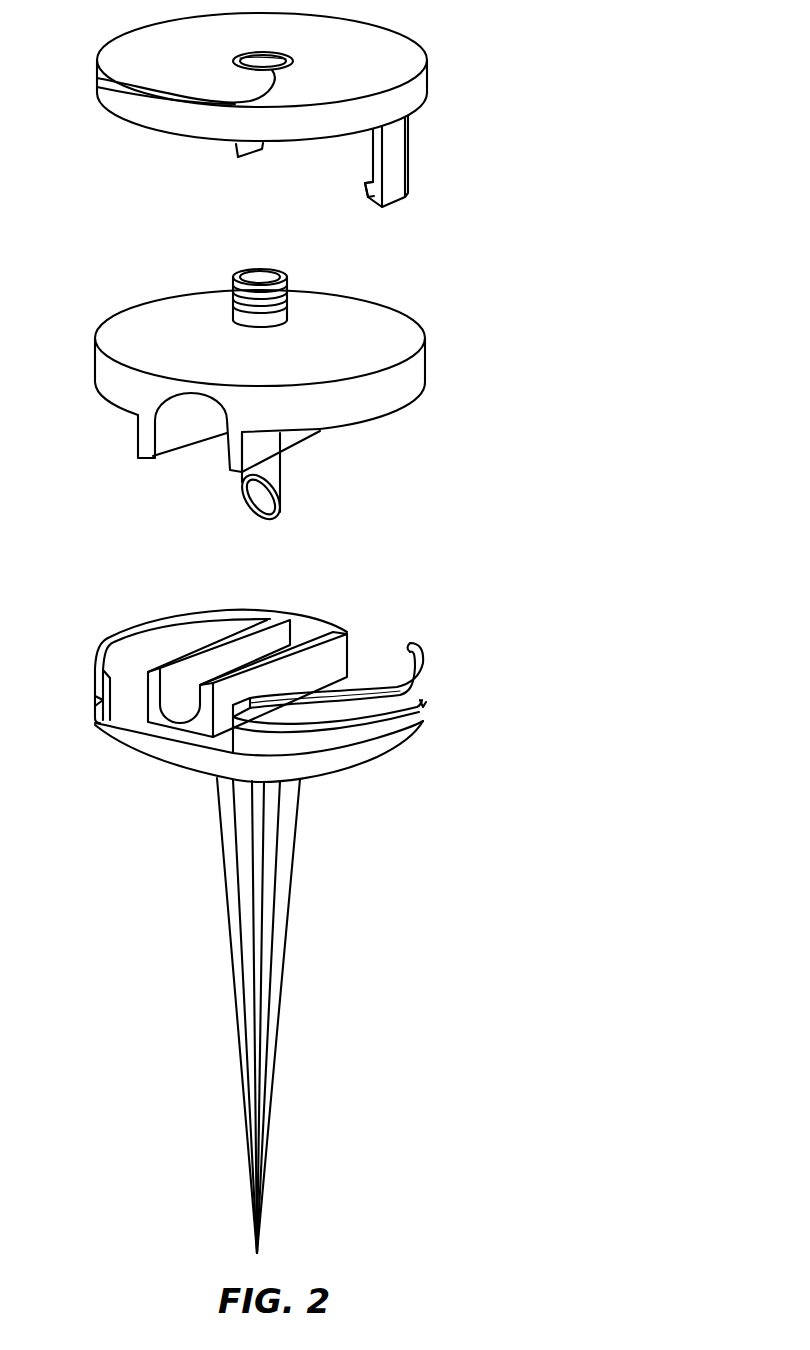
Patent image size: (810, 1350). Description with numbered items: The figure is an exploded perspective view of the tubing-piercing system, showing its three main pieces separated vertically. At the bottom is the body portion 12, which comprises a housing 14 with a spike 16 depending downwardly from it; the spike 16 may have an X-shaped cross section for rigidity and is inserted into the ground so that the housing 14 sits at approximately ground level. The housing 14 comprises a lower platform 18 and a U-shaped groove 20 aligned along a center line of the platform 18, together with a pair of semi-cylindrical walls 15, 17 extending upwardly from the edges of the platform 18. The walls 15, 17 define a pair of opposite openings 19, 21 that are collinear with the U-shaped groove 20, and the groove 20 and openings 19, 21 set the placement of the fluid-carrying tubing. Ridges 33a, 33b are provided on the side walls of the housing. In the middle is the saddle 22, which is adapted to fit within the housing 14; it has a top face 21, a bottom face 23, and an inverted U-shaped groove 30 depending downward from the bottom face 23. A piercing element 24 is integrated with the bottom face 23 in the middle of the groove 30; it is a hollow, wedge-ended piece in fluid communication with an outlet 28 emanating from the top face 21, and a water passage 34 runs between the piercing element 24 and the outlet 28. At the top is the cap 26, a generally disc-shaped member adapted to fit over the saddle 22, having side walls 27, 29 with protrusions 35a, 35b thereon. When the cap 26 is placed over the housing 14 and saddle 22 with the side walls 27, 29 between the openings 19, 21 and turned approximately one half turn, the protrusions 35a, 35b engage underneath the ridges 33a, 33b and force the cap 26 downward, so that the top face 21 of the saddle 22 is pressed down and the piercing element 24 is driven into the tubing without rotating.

The body portion 12 is at (262, 931).
The housing 14 is at (360, 752).
The semi-cylindrical wall 15 is at (413, 682).
The spike 16 is at (278, 1000).
The semi-cylindrical wall 17 is at (96, 668).
The lower platform 18 is at (411, 643).
The opening 19 is at (200, 743).
The U-shaped groove 20 is at (113, 740).
The opening 21 is at (127, 325).
The saddle 22 is at (393, 308).
The bottom face 23 is at (380, 425).
The piercing element 24 is at (273, 470).
The cap 26 is at (398, 45).
The side wall 27 is at (97, 86).
The outlet 28 is at (288, 285).
The side wall 29 is at (408, 157).
The inverted U-shaped groove 30 is at (160, 448).
The ridge 33a is at (97, 710).
The ridge 33b is at (425, 705).
The water passage 34 is at (260, 272).
The protrusion 35a is at (237, 150).
The protrusion 35b is at (365, 193).